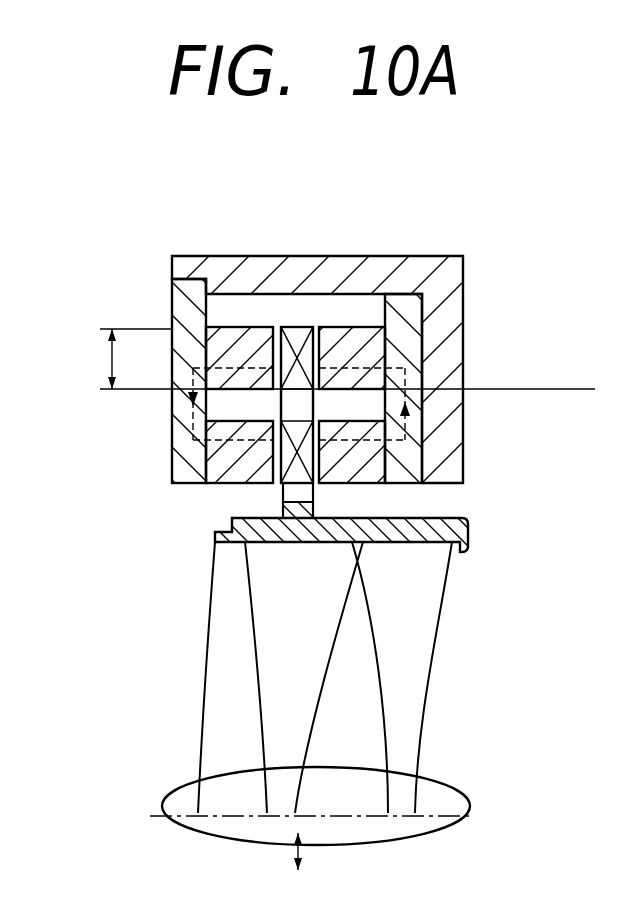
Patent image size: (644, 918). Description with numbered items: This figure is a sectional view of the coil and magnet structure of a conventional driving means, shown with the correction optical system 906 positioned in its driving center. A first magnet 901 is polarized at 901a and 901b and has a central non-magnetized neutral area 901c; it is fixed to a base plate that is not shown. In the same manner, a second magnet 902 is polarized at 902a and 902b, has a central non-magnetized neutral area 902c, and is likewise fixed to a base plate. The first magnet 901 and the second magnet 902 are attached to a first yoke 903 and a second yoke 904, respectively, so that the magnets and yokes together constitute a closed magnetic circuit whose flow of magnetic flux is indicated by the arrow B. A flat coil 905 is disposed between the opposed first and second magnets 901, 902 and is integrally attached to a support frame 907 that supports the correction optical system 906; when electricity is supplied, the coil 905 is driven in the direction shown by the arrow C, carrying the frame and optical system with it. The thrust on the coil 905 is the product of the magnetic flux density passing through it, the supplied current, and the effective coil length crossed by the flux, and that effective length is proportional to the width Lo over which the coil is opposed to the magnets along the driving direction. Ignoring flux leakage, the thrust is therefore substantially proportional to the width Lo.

The first magnet 901 is at (365, 380).
The polarized portion of first magnet 901a is at (430, 322).
The polarized portion of first magnet 901b is at (340, 484).
The central non-magnetized neutral area 901c is at (425, 425).
The second magnet 902 is at (254, 370).
The polarized portion of second magnet 902a is at (216, 326).
The polarized portion of second magnet 902b is at (216, 474).
The central non-magnetized neutral area 902c is at (207, 415).
The first yoke 903 is at (418, 325).
The second yoke 904 is at (182, 298).
The flat coil 905 is at (297, 326).
The correction optical system 906 is at (470, 800).
The support frame 907 is at (465, 550).
The width in which the coil is opposed to the magnets Lo is at (124, 359).
The arrow showing flow of magnetic flux B is at (425, 378).
The arrow showing driving direction C is at (302, 855).